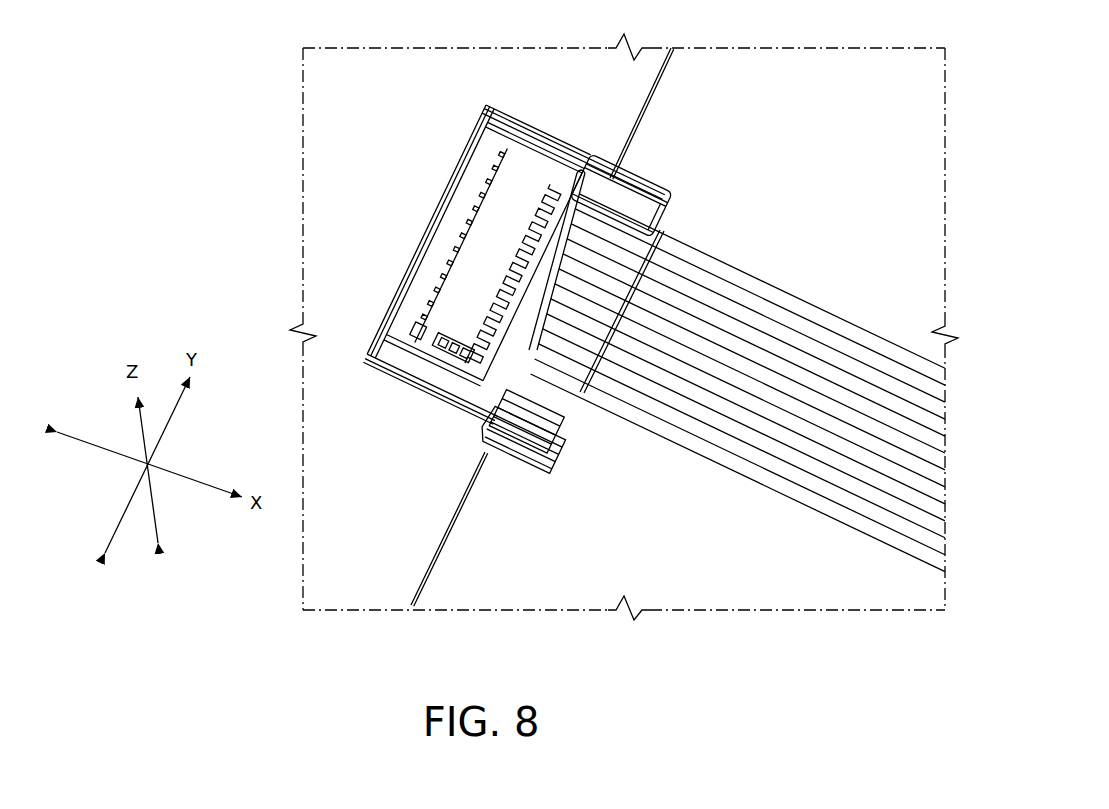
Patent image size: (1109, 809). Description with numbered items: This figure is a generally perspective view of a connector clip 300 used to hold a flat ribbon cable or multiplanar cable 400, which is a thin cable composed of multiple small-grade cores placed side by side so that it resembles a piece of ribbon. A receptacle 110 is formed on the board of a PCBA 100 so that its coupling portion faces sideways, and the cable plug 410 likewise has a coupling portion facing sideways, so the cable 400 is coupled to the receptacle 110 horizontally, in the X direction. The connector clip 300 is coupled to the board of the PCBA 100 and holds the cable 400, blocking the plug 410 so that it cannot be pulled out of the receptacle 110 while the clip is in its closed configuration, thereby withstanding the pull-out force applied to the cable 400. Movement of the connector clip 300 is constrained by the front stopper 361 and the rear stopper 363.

The PCBA 100 is at (413, 537).
The receptacle 110 is at (403, 272).
The connector clip 300 is at (485, 253).
The front stopper 361 is at (514, 276).
The rear stopper 363 is at (628, 184).
The ribbon cable 400 is at (838, 306).
The plug 410 is at (578, 206).